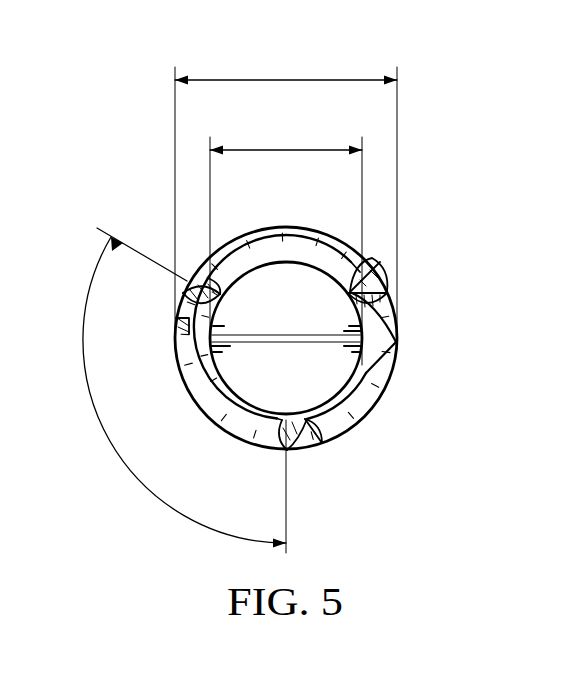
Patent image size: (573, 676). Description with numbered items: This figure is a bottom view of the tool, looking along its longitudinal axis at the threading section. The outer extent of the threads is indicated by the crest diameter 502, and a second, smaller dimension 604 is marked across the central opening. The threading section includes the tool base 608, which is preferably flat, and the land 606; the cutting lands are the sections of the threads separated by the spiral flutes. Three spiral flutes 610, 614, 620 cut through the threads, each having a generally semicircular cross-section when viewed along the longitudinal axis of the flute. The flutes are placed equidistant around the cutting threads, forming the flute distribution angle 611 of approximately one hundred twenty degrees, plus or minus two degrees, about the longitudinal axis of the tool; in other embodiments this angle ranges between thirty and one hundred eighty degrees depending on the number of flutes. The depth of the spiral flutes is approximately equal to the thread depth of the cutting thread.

The crest diameter 502 is at (285, 80).
The inner diameter 604 is at (285, 150).
The land 606 is at (287, 236).
The tool base 608 is at (330, 375).
The spiral flute 610 is at (378, 288).
The flute distribution angle 611 is at (108, 440).
The spiral flute 614 is at (298, 450).
The spiral flute 620 is at (186, 297).